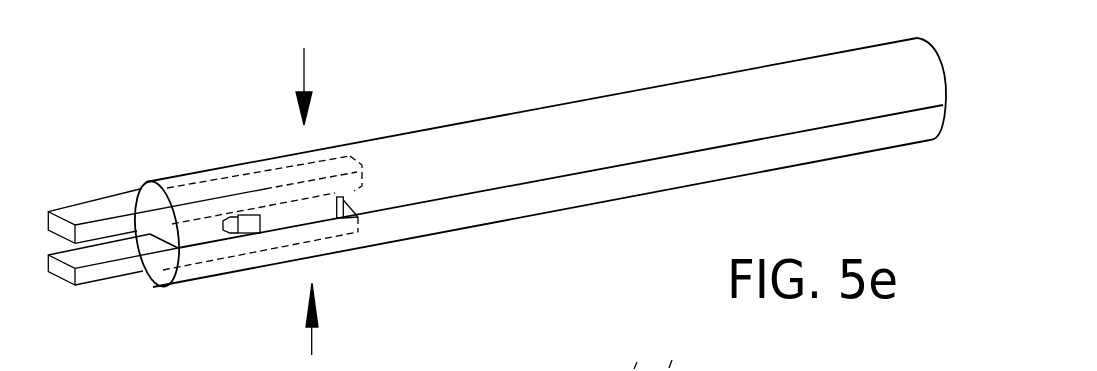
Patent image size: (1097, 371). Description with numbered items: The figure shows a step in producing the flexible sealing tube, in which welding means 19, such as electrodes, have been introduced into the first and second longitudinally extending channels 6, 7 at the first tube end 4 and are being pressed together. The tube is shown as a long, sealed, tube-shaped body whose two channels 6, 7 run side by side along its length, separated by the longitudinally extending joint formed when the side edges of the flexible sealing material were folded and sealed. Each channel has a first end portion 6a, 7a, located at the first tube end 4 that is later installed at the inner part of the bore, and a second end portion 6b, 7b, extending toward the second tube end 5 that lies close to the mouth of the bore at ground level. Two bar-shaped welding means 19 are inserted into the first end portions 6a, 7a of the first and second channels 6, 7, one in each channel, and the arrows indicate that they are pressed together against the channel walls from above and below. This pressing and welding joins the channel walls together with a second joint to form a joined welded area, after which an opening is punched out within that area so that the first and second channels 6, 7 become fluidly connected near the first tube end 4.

The second tube end 5 is at (947, 125).
The first longitudinally extending channel 6 is at (133, 190).
The second longitudinally extending channel 7 is at (148, 283).
The first end portion of the first channel 6a is at (363, 140).
The first end portion of the second channel 7a is at (383, 250).
The second end portion of the first channel 6b is at (912, 30).
The second end portion of the second channel 7b is at (930, 142).
The first tube end 4 is at (120, 253).
The welding means 19 is at (90, 215).